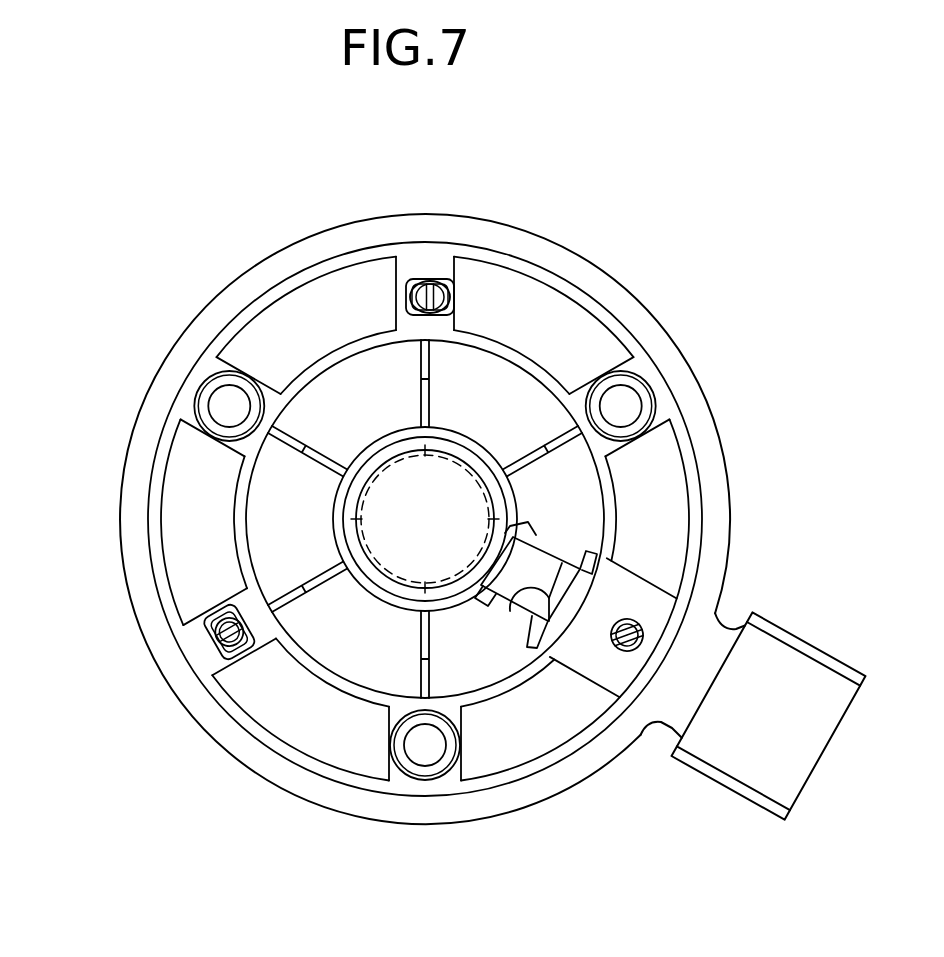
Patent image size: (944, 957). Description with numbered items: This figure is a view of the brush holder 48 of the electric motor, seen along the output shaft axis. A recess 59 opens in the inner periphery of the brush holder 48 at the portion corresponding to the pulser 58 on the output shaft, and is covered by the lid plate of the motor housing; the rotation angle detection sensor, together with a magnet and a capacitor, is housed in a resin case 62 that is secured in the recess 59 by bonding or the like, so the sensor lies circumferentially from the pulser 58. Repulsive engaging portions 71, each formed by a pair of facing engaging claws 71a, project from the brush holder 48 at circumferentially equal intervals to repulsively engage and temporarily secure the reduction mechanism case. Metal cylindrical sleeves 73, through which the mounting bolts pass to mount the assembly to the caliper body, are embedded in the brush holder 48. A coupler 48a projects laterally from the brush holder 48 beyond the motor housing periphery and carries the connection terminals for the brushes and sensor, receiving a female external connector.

The brush holder 48 is at (587, 278).
The coupler 48a is at (785, 660).
The pulser 58 is at (442, 457).
The recess 59 is at (549, 621).
The resin case 62 is at (537, 570).
The repulsive engaging portion 71 is at (448, 299).
The engaging claw 71a is at (220, 640).
The cylindrical sleeve 73 is at (240, 385).